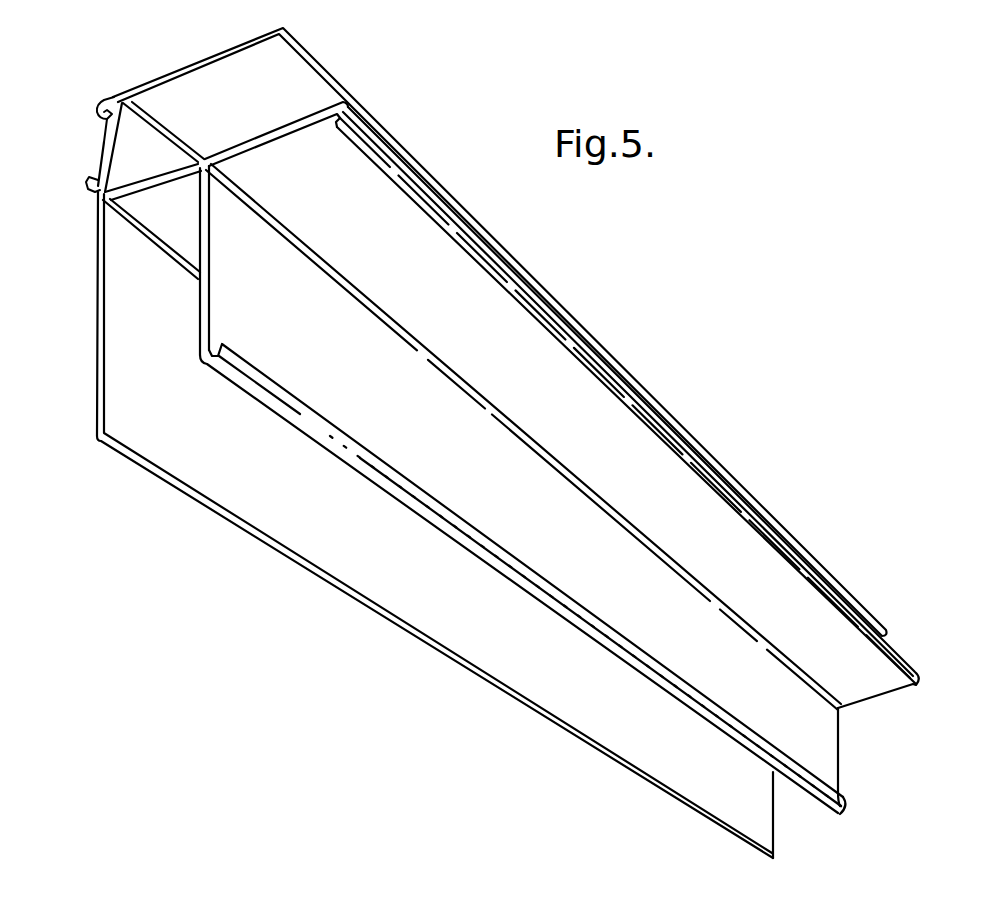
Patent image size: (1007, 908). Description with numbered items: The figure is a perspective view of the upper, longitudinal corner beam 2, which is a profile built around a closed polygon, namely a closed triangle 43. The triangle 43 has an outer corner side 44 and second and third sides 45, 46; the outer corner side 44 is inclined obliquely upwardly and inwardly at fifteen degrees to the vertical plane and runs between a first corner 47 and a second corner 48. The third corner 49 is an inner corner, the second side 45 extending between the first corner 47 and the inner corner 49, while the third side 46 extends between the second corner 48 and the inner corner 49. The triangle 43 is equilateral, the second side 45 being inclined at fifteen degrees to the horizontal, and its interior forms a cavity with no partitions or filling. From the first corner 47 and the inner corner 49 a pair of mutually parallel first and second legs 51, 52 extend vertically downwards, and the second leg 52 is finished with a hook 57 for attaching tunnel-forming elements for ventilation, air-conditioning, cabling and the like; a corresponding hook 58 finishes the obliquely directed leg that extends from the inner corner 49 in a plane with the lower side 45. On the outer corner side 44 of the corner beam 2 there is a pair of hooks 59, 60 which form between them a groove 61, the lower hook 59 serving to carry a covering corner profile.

The upper longitudinal corner beam 2 is at (84, 316).
The closed triangle 43 is at (153, 165).
The outer corner side 44 is at (111, 128).
The second side 45 is at (150, 185).
The third side 46 is at (168, 128).
The first corner 47 is at (100, 201).
The second corner 48 is at (121, 96).
The third inner corner 49 is at (208, 163).
The first leg 51 is at (100, 380).
The second leg 52 is at (205, 300).
The hook 57 is at (270, 378).
The hook 58 is at (432, 205).
The lower hook 59 is at (101, 97).
The hook 60 is at (84, 183).
The groove 61 is at (93, 158).